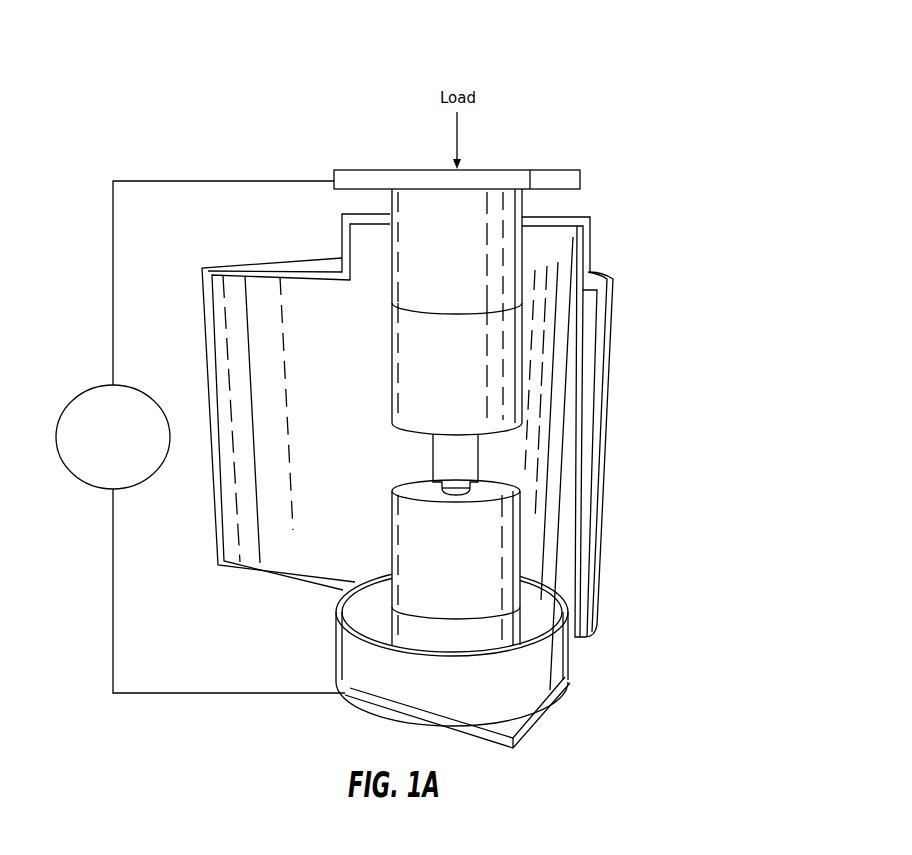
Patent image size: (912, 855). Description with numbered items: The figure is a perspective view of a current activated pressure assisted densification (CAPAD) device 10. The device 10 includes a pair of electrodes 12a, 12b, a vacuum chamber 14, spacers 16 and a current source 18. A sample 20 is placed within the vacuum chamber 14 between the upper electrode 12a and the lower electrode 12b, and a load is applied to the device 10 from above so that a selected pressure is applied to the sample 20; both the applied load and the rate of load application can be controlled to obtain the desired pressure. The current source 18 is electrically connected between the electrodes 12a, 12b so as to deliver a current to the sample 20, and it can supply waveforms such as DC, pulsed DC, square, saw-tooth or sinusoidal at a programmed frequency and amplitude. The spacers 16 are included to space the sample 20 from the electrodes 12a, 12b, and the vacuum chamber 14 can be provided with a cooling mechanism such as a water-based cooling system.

The current activated pressure assisted densification (CAPAD) device 10 is at (176, 93).
The electrode 12a is at (505, 242).
The electrode 12b is at (497, 645).
The vacuum chamber 14 is at (570, 503).
The spacers 16 is at (417, 405).
The current source 18 is at (83, 390).
The sample 20 is at (472, 463).